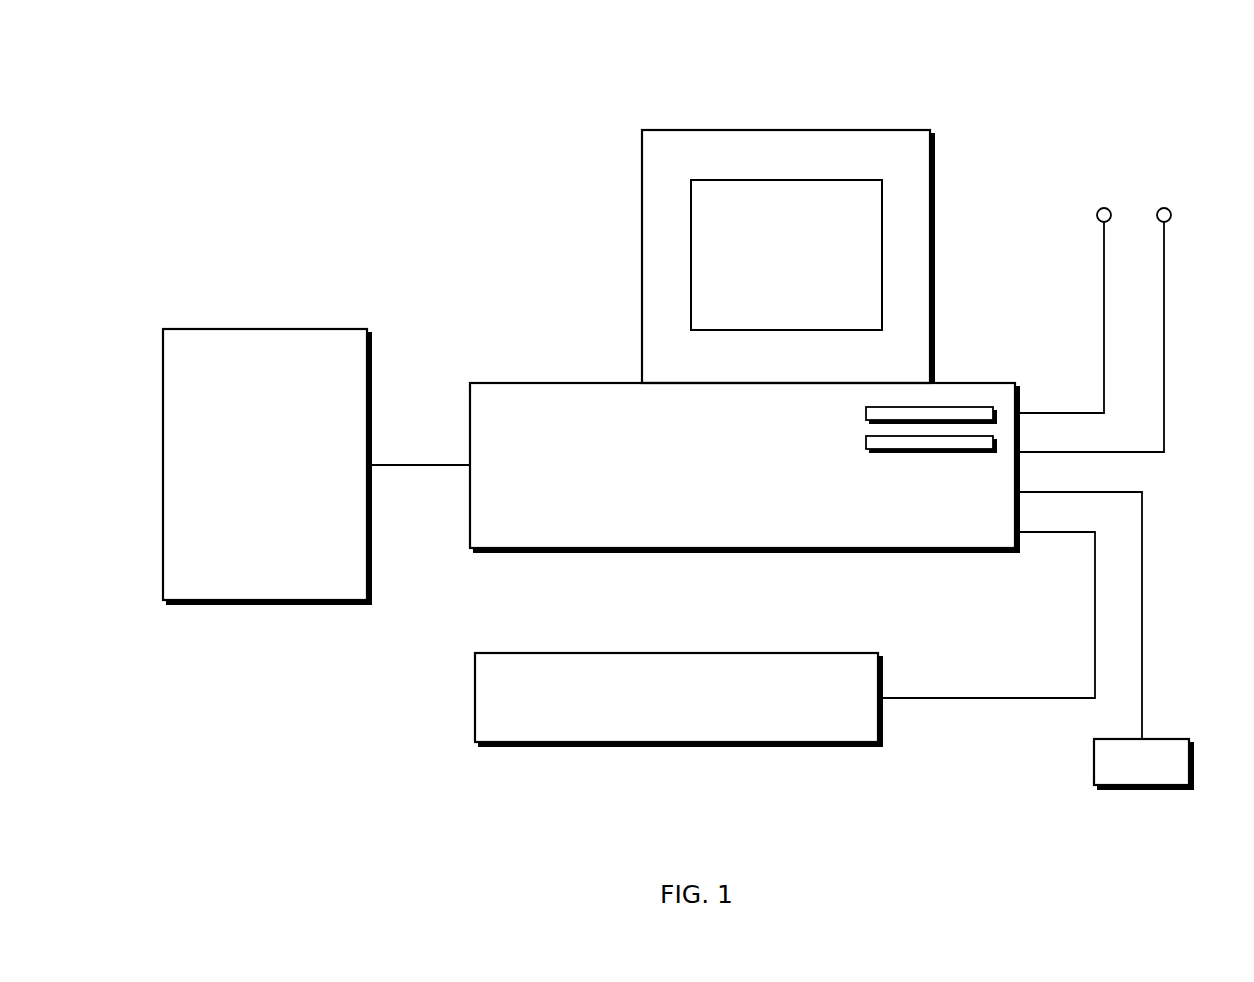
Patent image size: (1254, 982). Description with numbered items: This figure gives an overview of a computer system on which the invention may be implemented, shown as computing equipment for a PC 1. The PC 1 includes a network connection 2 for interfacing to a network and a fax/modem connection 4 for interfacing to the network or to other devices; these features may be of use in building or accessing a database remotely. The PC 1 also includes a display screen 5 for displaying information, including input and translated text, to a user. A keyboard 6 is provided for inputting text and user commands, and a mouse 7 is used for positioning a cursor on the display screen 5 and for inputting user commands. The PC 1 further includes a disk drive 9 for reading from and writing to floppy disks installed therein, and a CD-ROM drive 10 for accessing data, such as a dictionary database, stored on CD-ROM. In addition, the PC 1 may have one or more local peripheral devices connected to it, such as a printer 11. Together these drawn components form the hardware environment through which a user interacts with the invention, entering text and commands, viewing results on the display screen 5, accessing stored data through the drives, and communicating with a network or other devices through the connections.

The PC 1 is at (450, 122).
The network connection 2 is at (1103, 271).
The fax/modem connection 4 is at (1165, 282).
The display screen 5 is at (737, 180).
The keyboard 6 is at (614, 653).
The mouse 7 is at (1165, 739).
The disk drive 9 is at (866, 412).
The CD-ROM drive 10 is at (866, 443).
The printer 11 is at (250, 329).